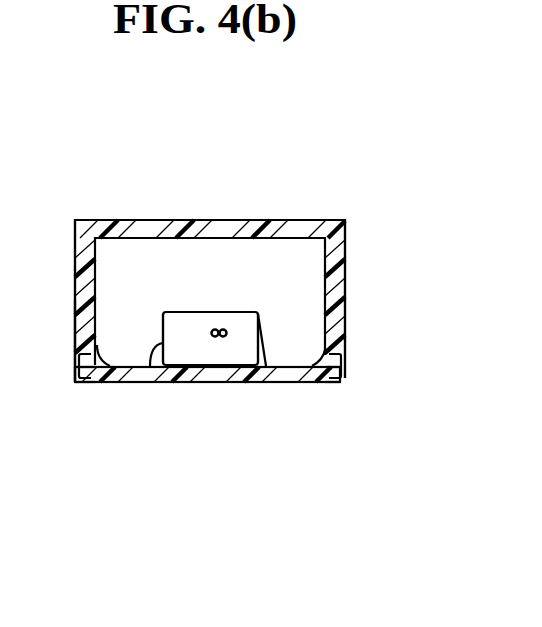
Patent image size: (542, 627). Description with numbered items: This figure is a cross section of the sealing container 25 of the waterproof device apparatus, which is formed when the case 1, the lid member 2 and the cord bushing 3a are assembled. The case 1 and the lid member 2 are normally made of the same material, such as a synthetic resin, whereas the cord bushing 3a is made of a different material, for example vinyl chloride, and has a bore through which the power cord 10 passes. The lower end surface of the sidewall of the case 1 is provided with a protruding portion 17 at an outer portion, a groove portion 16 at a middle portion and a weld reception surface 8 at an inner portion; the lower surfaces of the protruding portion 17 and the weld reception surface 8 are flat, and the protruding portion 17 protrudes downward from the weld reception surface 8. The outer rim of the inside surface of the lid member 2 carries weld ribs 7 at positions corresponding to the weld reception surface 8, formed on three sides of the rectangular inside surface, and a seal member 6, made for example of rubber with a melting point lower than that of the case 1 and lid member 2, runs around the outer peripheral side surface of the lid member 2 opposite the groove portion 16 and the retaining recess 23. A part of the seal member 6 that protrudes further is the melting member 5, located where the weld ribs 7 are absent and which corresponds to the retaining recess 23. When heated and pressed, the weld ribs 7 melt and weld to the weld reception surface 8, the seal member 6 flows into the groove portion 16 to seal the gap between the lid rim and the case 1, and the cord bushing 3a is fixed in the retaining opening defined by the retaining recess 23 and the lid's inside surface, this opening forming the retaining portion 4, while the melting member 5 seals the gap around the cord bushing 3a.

The case 1 is at (205, 220).
The lid member 2 is at (197, 382).
The cord bushing 3a is at (252, 317).
The retaining portion 4 is at (142, 382).
The melting member 5 is at (266, 382).
The seal member 6 is at (85, 382).
The weld ribs 7 is at (37, 341).
The weld reception surface 8 is at (97, 342).
The power cord 10 is at (222, 330).
The groove portion 16 is at (83, 357).
The protruding portion 17 is at (80, 380).
The retaining recess 23 is at (160, 312).
The sealing container 25 is at (347, 240).